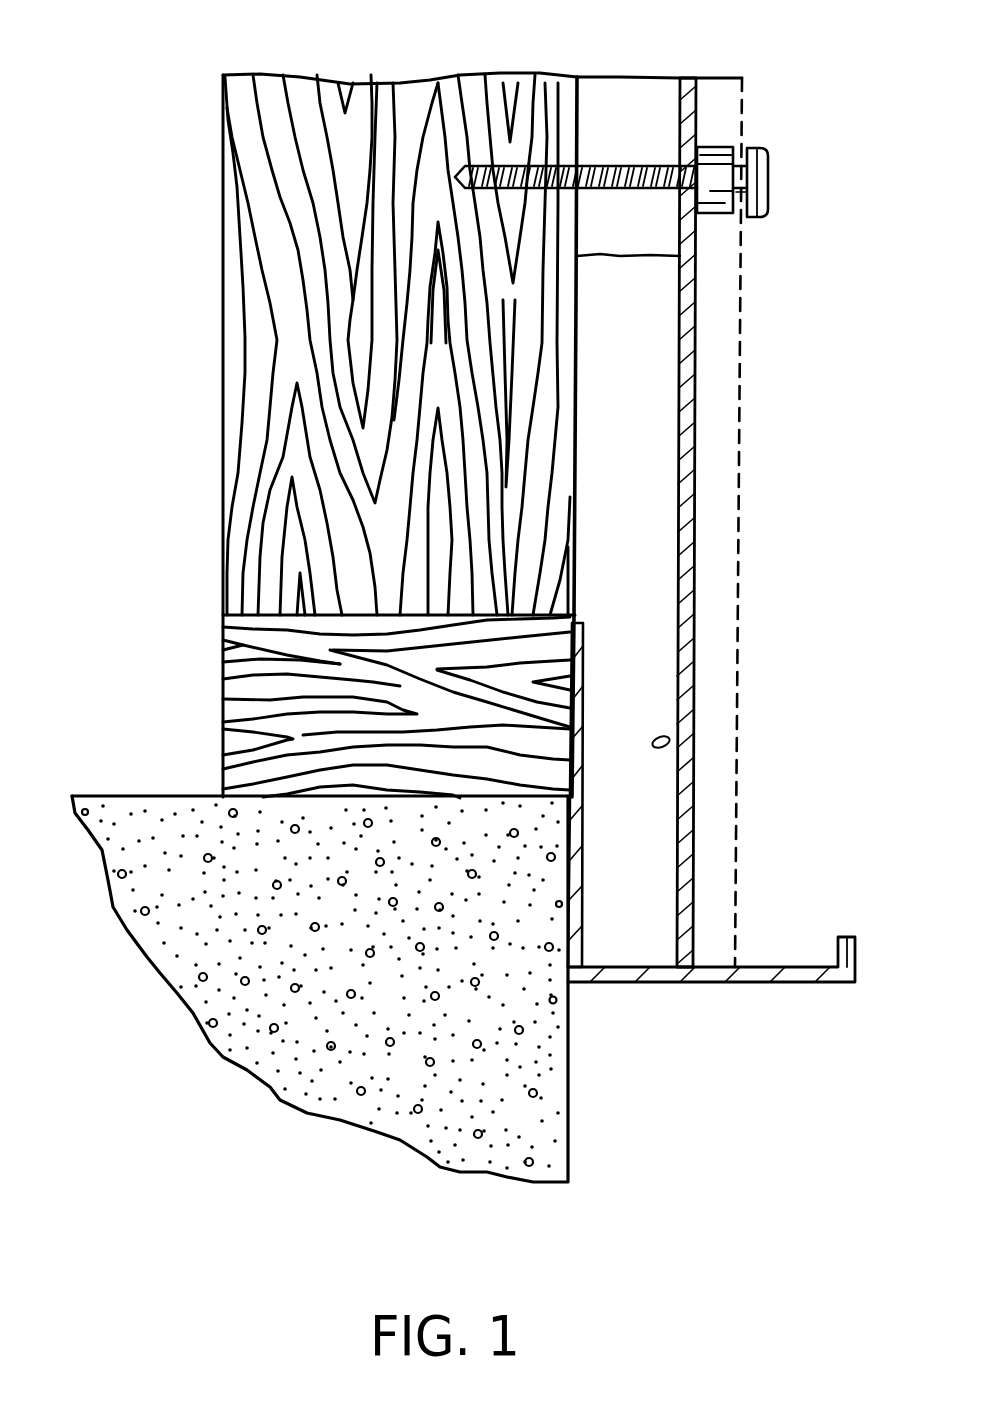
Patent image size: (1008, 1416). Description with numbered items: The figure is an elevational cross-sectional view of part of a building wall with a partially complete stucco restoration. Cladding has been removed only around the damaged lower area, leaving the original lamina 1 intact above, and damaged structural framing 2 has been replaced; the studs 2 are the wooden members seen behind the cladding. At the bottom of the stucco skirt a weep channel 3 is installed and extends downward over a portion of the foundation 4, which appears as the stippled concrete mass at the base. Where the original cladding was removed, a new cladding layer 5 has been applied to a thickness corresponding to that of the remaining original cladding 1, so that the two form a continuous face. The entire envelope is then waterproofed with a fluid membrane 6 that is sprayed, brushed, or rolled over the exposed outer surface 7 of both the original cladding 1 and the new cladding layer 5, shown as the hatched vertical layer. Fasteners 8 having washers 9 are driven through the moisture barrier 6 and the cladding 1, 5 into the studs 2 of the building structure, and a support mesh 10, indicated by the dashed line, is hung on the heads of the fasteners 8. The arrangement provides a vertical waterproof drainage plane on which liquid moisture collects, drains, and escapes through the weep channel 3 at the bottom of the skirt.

The original lamina 1 is at (623, 97).
The structural framing 2 is at (223, 163).
The weep channel 3 is at (828, 985).
The foundation 4 is at (570, 1105).
The new cladding layer 5 is at (651, 454).
The fluid membrane 6 is at (684, 337).
The exposed outer surface 7 is at (670, 745).
The fastener 8 is at (767, 165).
The washer 9 is at (715, 147).
The support mesh 10 is at (738, 612).